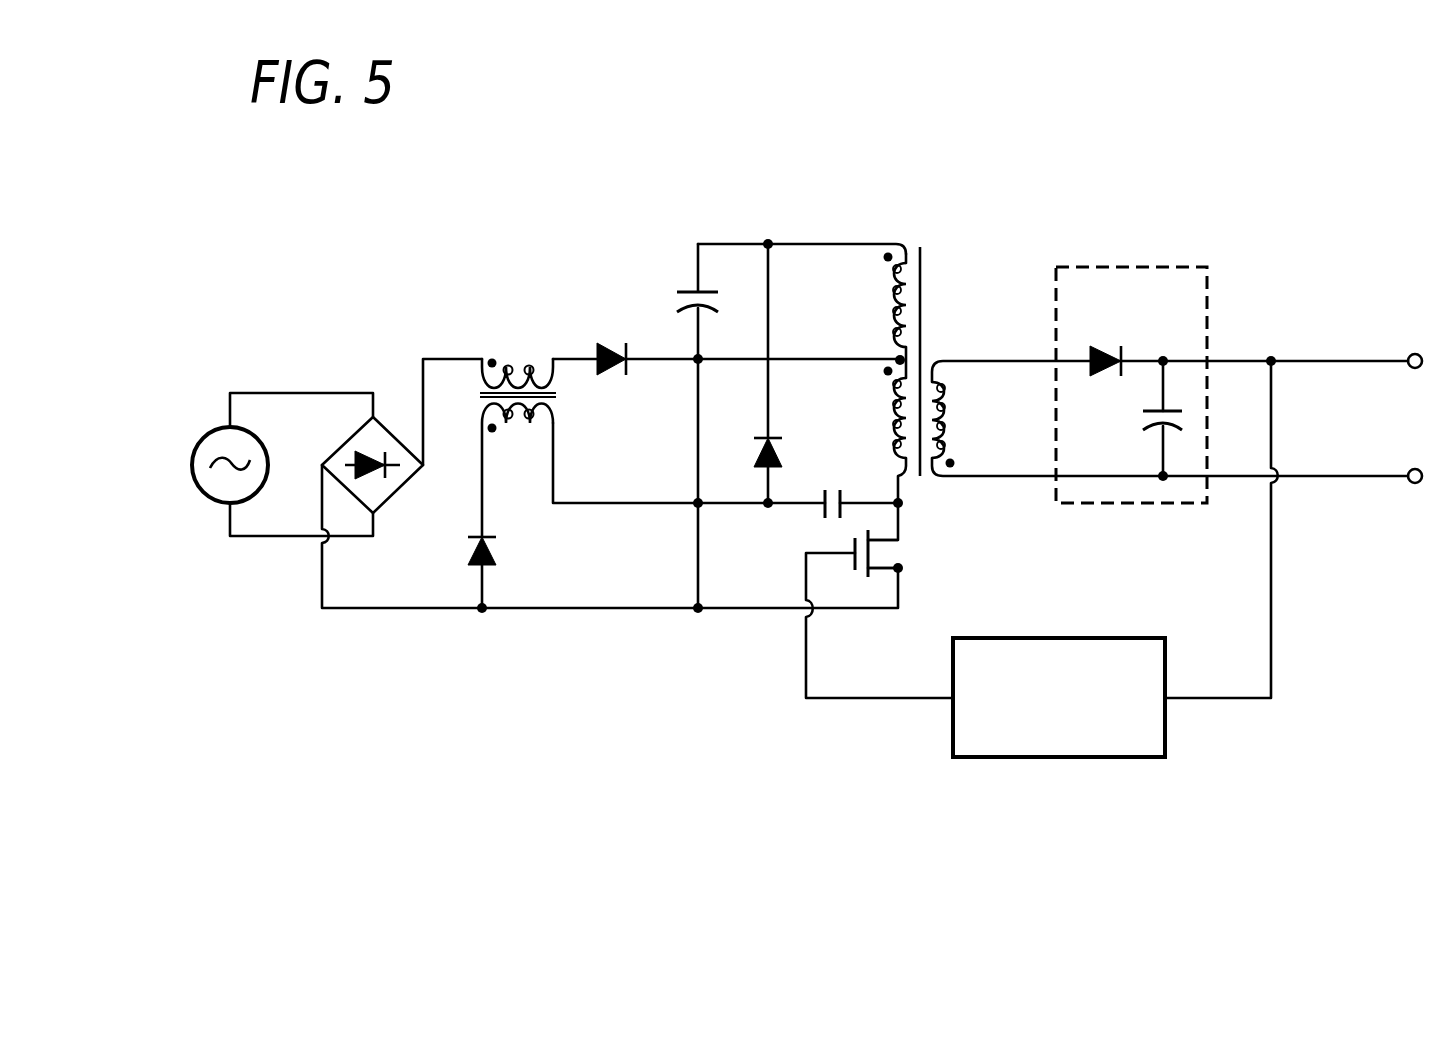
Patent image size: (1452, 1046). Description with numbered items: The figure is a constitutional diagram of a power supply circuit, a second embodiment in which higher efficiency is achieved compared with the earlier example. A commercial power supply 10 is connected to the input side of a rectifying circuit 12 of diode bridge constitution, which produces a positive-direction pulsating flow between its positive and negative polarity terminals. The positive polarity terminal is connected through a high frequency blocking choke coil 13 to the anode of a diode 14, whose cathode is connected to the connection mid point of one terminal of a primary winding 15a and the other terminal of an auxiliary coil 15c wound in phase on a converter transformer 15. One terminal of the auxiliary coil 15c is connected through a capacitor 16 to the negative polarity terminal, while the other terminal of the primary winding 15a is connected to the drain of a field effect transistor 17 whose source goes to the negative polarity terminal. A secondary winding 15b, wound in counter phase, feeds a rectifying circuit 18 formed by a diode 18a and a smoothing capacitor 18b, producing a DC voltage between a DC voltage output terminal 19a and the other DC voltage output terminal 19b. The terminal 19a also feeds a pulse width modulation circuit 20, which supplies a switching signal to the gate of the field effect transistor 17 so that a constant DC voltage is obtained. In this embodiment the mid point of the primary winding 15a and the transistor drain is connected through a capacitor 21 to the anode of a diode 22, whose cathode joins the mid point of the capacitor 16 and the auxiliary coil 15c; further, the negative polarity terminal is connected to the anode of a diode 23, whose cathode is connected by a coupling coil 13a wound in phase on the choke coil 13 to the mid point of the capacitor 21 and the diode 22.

The commercial power supply 10 is at (190, 463).
The rectifying circuit 12 is at (403, 462).
The high frequency blocking choke coil 13 is at (518, 358).
The coupling coil 13a is at (517, 426).
The diode 14 is at (617, 377).
The converter transformer 15 is at (918, 328).
The primary winding 15a is at (893, 396).
The secondary winding 15b is at (960, 413).
The auxiliary coil 15c is at (893, 300).
The capacitor 16 is at (680, 300).
The field effect transistor 17 is at (912, 548).
The rectifying circuit 18 is at (1131, 338).
The diode 18a is at (1113, 345).
The smoothing capacitor 18b is at (1142, 418).
The DC voltage output terminal 19a is at (1415, 354).
The DC voltage output terminal 19b is at (1415, 484).
The pulse width modulation circuit 20 is at (1078, 638).
The capacitor 21 is at (818, 511).
The diode 22 is at (785, 447).
The diode 23 is at (503, 552).